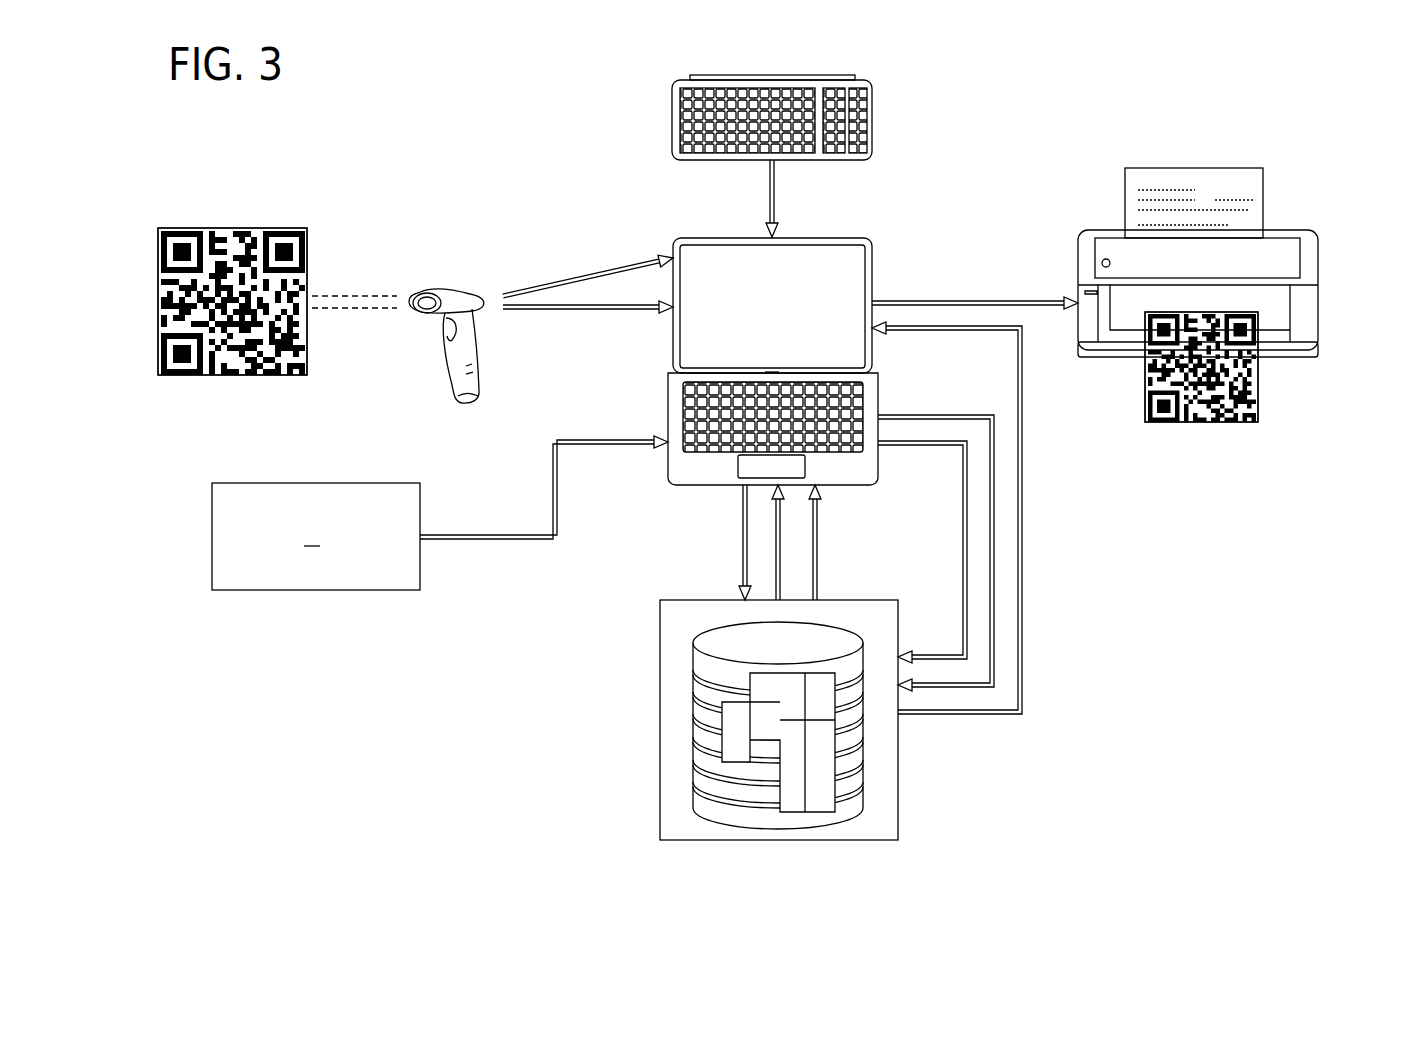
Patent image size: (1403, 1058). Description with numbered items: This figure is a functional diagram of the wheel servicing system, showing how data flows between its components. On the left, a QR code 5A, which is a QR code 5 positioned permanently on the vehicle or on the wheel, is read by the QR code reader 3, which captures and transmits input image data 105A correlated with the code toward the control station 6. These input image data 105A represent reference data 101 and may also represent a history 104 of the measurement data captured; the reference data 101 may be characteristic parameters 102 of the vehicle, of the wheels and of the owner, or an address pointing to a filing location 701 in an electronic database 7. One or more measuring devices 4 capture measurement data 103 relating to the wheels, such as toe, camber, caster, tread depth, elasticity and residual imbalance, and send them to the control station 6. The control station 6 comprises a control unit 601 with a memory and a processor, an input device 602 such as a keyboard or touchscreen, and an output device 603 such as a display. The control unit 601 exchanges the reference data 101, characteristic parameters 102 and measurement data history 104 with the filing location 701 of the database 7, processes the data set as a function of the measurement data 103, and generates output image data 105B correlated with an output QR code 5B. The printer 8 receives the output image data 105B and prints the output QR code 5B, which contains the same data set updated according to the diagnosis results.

The QR code reader 3 is at (448, 290).
The measuring device 4 is at (316, 536).
The QR code 5 is at (237, 372).
The input QR code 5A is at (238, 230).
The output QR code 5B is at (1262, 391).
The control station 6 is at (782, 328).
The electronic database 7 is at (831, 720).
The printer 8 is at (1278, 257).
The reference data 101 is at (555, 312).
The characteristic parameters 102 is at (818, 522).
The measurement data 103 is at (482, 538).
The measurement data history 104 is at (541, 286).
The input image data 105A is at (625, 312).
The output image data 105B is at (982, 295).
The control unit 601 is at (665, 472).
The input device 602 is at (788, 95).
The output device 603 is at (787, 317).
The filing location 701 is at (865, 745).